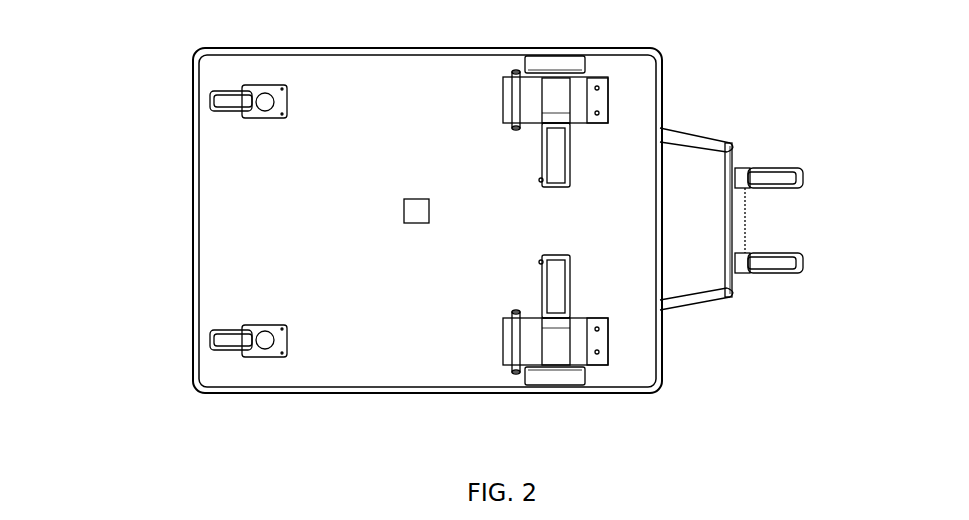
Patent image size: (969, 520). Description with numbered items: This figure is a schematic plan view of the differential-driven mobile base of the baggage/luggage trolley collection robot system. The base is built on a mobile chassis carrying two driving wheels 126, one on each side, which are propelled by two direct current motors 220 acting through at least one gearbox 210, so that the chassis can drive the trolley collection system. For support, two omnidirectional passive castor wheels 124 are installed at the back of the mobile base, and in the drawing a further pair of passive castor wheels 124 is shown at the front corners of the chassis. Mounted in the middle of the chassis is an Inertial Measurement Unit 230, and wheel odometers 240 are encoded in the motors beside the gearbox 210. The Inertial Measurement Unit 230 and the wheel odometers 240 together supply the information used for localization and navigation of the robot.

The omnidirectional passive castor wheels 124 is at (263, 325).
The driving wheels 126 is at (555, 65).
The gearbox 210 is at (555, 342).
The direct current (DC) motors 220 is at (555, 155).
The Inertial Measurement Unit (IMU) 230 is at (417, 210).
The wheel odometers 240 is at (598, 90).